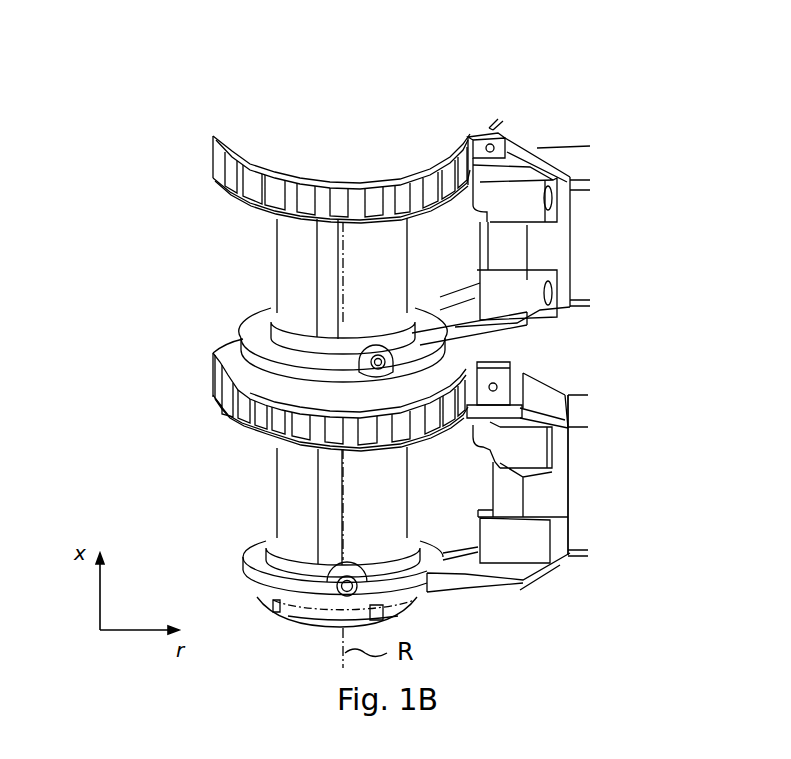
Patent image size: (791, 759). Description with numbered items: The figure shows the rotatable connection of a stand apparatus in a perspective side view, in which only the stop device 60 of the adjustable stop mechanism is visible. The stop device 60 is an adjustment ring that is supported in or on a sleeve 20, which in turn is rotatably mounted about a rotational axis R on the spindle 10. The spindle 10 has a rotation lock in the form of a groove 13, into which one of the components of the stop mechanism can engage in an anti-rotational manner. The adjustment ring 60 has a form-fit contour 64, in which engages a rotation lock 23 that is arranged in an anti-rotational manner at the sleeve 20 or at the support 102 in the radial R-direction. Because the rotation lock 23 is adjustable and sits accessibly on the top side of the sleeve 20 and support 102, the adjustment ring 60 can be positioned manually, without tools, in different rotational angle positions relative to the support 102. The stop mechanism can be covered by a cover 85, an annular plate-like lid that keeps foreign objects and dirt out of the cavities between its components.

The spindle 10 is at (400, 270).
The groove 13 is at (320, 315).
The sleeve 20 is at (247, 440).
The rotation lock 23 is at (518, 362).
The stop device 60 is at (211, 388).
The form-fit contour 64 is at (238, 422).
The cover 85 is at (243, 368).
The support 102 is at (579, 437).